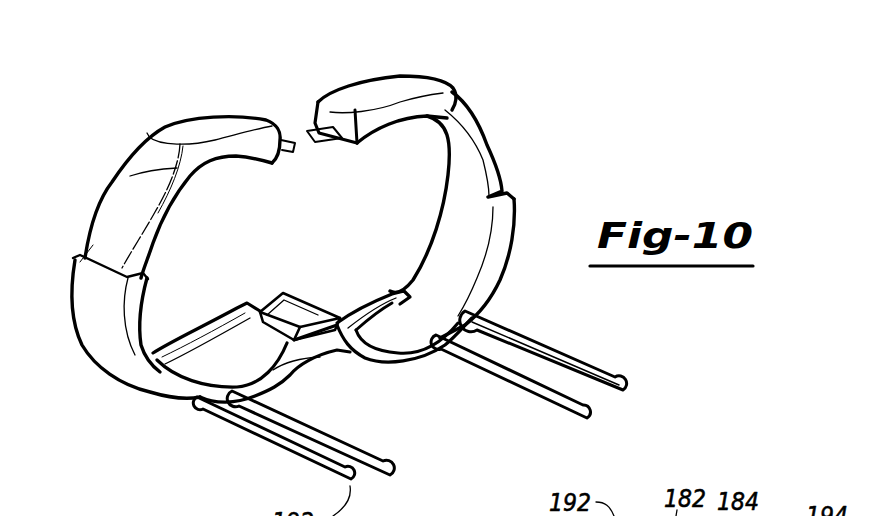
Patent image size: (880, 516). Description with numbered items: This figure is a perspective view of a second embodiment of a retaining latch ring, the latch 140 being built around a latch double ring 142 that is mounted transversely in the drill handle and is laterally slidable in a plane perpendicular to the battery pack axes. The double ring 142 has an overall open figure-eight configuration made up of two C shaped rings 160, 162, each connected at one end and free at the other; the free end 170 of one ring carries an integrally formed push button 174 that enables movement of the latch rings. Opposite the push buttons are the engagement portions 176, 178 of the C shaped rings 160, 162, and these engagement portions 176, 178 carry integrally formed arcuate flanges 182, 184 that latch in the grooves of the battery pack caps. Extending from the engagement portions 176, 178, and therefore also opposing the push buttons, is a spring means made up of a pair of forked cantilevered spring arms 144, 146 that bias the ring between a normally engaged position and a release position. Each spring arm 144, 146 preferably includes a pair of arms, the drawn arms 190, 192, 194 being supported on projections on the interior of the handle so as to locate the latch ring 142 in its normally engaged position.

The latch 140 is at (471, 169).
The latch double ring 142 is at (107, 178).
The forked cantilevered spring arm 144 is at (580, 393).
The forked cantilevered spring arm 146 is at (294, 452).
The C shaped ring 160 is at (498, 181).
The C shaped ring 162 is at (66, 300).
The free end 170 is at (379, 90).
The push button 174 is at (203, 127).
The engagement portion 176 is at (503, 312).
The engagement portion 178 is at (290, 363).
The arcuate flange 182 is at (358, 312).
The arcuate flange 184 is at (204, 343).
The arm 190 is at (622, 384).
The arm 192 is at (592, 412).
The arm 194 is at (388, 472).